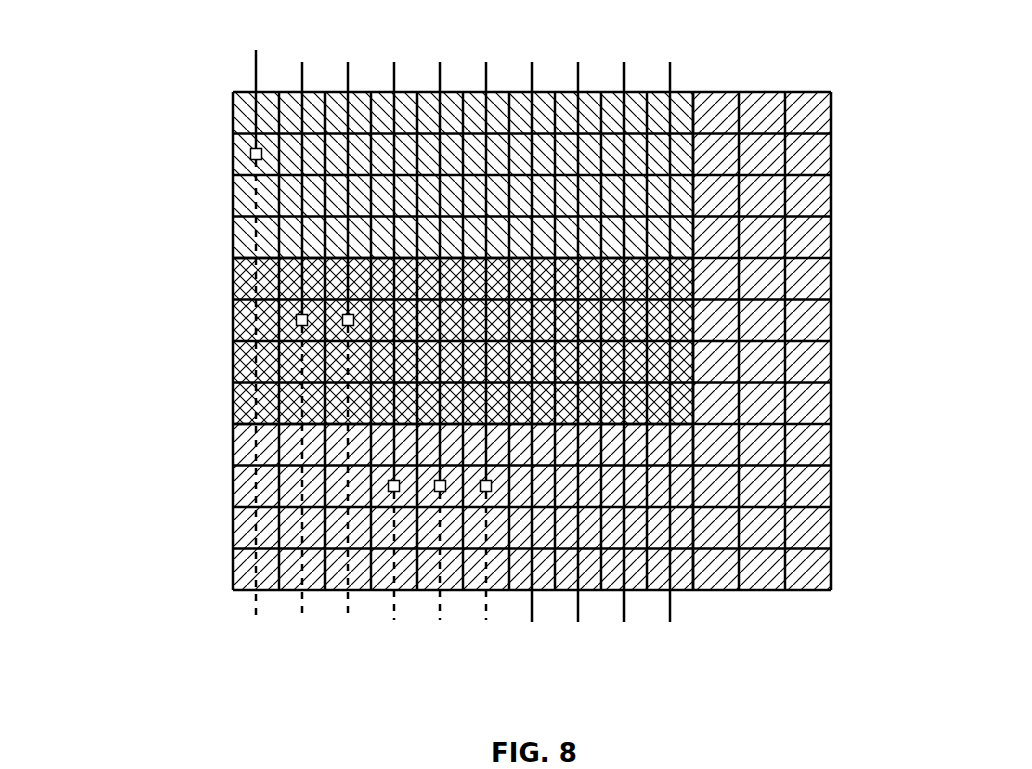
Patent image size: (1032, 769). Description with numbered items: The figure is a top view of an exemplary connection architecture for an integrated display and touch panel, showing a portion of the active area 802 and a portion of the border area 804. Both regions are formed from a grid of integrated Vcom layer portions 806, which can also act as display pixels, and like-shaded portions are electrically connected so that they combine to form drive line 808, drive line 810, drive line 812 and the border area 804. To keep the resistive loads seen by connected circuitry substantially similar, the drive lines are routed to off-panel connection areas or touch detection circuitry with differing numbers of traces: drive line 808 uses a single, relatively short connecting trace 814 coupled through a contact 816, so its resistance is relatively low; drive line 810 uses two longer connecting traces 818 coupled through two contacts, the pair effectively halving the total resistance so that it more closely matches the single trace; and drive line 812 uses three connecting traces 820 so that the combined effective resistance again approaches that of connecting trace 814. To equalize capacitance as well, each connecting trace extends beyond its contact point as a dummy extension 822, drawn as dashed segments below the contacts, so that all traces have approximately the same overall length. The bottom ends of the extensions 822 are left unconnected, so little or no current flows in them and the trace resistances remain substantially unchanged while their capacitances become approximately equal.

The active area 802 is at (381, 401).
The border area 804 is at (831, 600).
The integrated Vcom layer portions 806 is at (450, 401).
The drive line 808 is at (207, 256).
The drive line 810 is at (207, 422).
The drive line 812 is at (207, 588).
The connecting trace 814 is at (256, 52).
The contact 816 is at (251, 148).
The connecting traces 818 is at (302, 64).
The connecting traces 820 is at (394, 64).
The extensions 822 is at (256, 613).